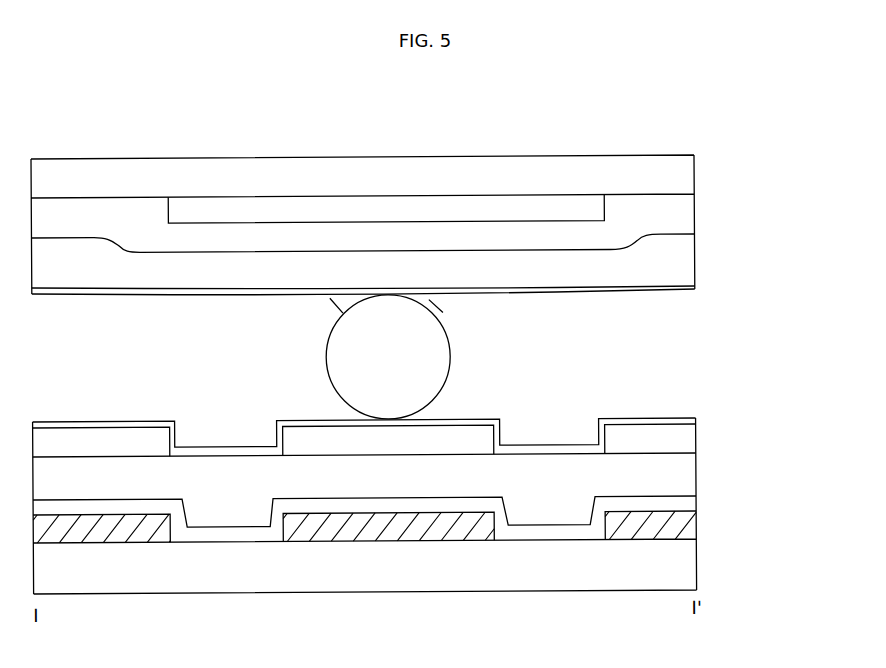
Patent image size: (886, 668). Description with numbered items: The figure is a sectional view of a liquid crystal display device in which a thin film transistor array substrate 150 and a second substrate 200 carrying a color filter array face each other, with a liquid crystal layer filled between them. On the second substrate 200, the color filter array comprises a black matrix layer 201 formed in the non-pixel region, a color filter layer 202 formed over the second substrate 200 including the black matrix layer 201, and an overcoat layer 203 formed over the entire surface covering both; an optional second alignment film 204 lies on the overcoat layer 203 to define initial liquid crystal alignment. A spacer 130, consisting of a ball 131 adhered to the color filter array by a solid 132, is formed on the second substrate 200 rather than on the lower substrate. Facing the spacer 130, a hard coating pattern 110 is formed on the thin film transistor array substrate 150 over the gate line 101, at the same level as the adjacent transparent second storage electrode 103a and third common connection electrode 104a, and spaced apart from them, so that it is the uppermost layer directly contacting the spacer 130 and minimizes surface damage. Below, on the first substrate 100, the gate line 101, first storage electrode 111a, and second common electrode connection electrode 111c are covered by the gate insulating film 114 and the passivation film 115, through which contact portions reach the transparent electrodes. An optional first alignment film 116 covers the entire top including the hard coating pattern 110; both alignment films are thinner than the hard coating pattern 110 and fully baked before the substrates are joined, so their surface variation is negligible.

The first substrate 100 is at (683, 573).
The gate line 101 is at (356, 530).
The second storage electrode 103a is at (102, 437).
The third common connection electrode 104a is at (683, 445).
The hard coating pattern 110 is at (478, 436).
The first storage electrode 111a is at (123, 537).
The second common electrode connection electrode 111c is at (690, 526).
The gate insulating film 114 is at (683, 505).
The passivation film 115 is at (683, 475).
The first alignment film 116 is at (682, 424).
The spacer 130 is at (448, 356).
The ball 131 is at (434, 365).
The solid 132 is at (431, 305).
The thin film transistor array substrate 150 is at (437, 502).
The second substrate 200 is at (688, 181).
The black matrix layer 201 is at (397, 209).
The color filter layer 202 is at (688, 218).
The overcoat layer 203 is at (688, 263).
The second alignment film 204 is at (694, 293).